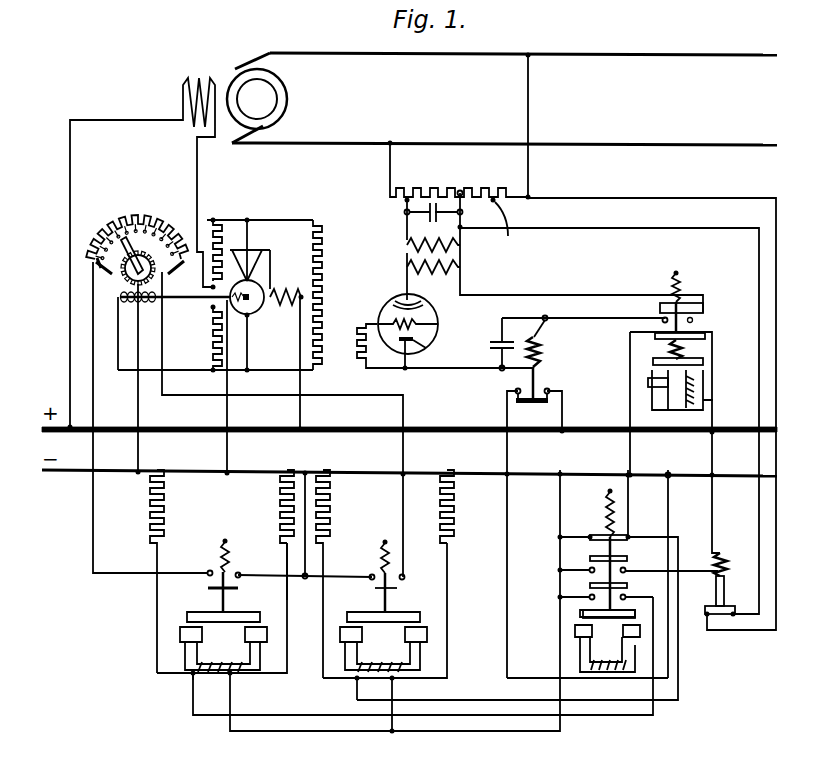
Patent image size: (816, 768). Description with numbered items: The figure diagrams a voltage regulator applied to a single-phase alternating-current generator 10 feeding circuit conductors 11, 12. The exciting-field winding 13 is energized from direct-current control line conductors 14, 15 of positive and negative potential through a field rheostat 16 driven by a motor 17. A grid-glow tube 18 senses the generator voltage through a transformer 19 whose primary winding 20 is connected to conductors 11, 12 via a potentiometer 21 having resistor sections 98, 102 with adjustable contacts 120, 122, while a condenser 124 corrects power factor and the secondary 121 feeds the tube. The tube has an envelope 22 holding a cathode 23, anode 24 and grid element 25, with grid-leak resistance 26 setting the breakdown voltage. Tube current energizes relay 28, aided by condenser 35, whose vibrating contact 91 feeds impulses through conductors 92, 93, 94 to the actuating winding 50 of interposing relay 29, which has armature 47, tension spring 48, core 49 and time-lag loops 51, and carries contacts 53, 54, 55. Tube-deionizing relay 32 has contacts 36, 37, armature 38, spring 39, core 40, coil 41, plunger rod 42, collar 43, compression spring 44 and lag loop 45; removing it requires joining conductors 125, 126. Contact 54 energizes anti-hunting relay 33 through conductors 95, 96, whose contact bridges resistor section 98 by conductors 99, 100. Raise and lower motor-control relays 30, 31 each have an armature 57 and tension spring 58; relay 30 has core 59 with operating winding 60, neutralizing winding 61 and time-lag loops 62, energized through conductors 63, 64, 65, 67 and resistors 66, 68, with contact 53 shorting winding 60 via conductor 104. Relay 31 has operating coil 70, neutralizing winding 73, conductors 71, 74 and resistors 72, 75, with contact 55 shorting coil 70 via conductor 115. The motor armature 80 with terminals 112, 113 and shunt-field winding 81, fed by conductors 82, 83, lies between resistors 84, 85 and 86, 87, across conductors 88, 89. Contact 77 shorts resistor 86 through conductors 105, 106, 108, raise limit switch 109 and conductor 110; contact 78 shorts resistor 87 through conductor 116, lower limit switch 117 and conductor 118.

The alternating-current generator 10 is at (272, 98).
The circuit conductor 11 is at (493, 57).
The circuit conductor 12 is at (469, 137).
The exciting-field winding 13 is at (183, 98).
The control line conductor 14 is at (290, 434).
The control line conductor 15 is at (431, 461).
The field rheostat 16 is at (137, 239).
The motor 17 is at (252, 320).
The grid-glow tube 18 is at (392, 319).
The transformer 19 is at (448, 264).
The primary winding 20 is at (405, 246).
The potentiometer 21 is at (460, 126).
The envelope 22 is at (419, 304).
The cathode 23 is at (403, 298).
The anode 24 is at (425, 354).
The grid element 25 is at (437, 325).
The grid-leak resistance 26 is at (435, 355).
The relay 28 is at (545, 361).
The interposing relay 29 is at (587, 638).
The raise motor-control relay 30 is at (416, 599).
The lower motor-control relay 31 is at (200, 592).
The tube-deionizing relay 32 is at (694, 378).
The anti-hunting relay 33 is at (711, 585).
The condenser 35 is at (490, 344).
The contacts 36 is at (703, 308).
The contacts 37 is at (705, 336).
The movable armature 38 is at (662, 351).
The spring 39 is at (680, 288).
The stationary core member 40 is at (680, 404).
The coil 41 is at (703, 385).
The plunger rod 42 is at (660, 308).
The collar 43 is at (655, 335).
The compression spring 44 is at (687, 350).
The lag loop 45 is at (648, 385).
The movable armature 47 is at (583, 614).
The tension spring 48 is at (614, 517).
The stationary core member 49 is at (580, 650).
The actuating winding 50 is at (608, 680).
The time-lag loops 51 is at (592, 635).
The contact 53 is at (604, 532).
The contact 54 is at (592, 557).
The contact member 55 is at (606, 584).
The movable armature 57 is at (221, 609).
The tension spring 58 is at (229, 555).
The stationary magnetic core 59 is at (347, 650).
The main operating winding 60 is at (367, 689).
The neutralizing winding 61 is at (398, 684).
The time-lag loops 62 is at (405, 636).
The conductor 63 is at (229, 727).
The conductor 64 is at (393, 733).
The conductor 65 is at (323, 625).
The resistor 66 is at (330, 516).
The conductor 67 is at (447, 625).
The resistor 68 is at (454, 516).
The operating coil 70 is at (206, 686).
The conductor 71 is at (157, 628).
The resistor 72 is at (150, 516).
The neutralizing winding 73 is at (233, 681).
The conductor 74 is at (305, 579).
The resistor 75 is at (280, 516).
The contact 77 is at (405, 578).
The contact 78 is at (210, 571).
The armature 80 is at (252, 271).
The shunt-field winding 81 is at (290, 287).
The conductor 82 is at (300, 392).
The conductor 83 is at (229, 413).
The resistor element 84 is at (322, 263).
The resistor element 85 is at (322, 342).
The resistor 86 is at (211, 285).
The resistor 87 is at (213, 347).
The conductor 88 is at (266, 219).
The conductor 89 is at (274, 372).
The contact 91 is at (545, 406).
The conductor 92 is at (562, 404).
The conductor 93 is at (507, 457).
The conductor 94 is at (669, 519).
The conductor 95 is at (662, 568).
The conductor 96 is at (712, 519).
The resistor section 98 is at (473, 210).
The conductor 99 is at (629, 230).
The conductor 100 is at (655, 192).
The resistor section 102 is at (417, 180).
The conductor 104 is at (678, 690).
The conductor 105 is at (287, 556).
The conductor 106 is at (370, 577).
The conductor 108 is at (404, 397).
The raise limit switch 109 is at (162, 302).
The conductor 110 is at (210, 219).
The terminal 112 is at (246, 233).
The terminal 113 is at (252, 314).
The conductor 115 is at (193, 703).
The conductor 116 is at (93, 548).
The lower limit switch 117 is at (106, 270).
The conductor 118 is at (120, 371).
The adjustable contact 120 is at (404, 212).
The secondary 121 is at (460, 282).
The adjustable contact 122 is at (513, 228).
The condenser 124 is at (427, 215).
The conductor 125 is at (563, 291).
The conductor 126 is at (551, 318).